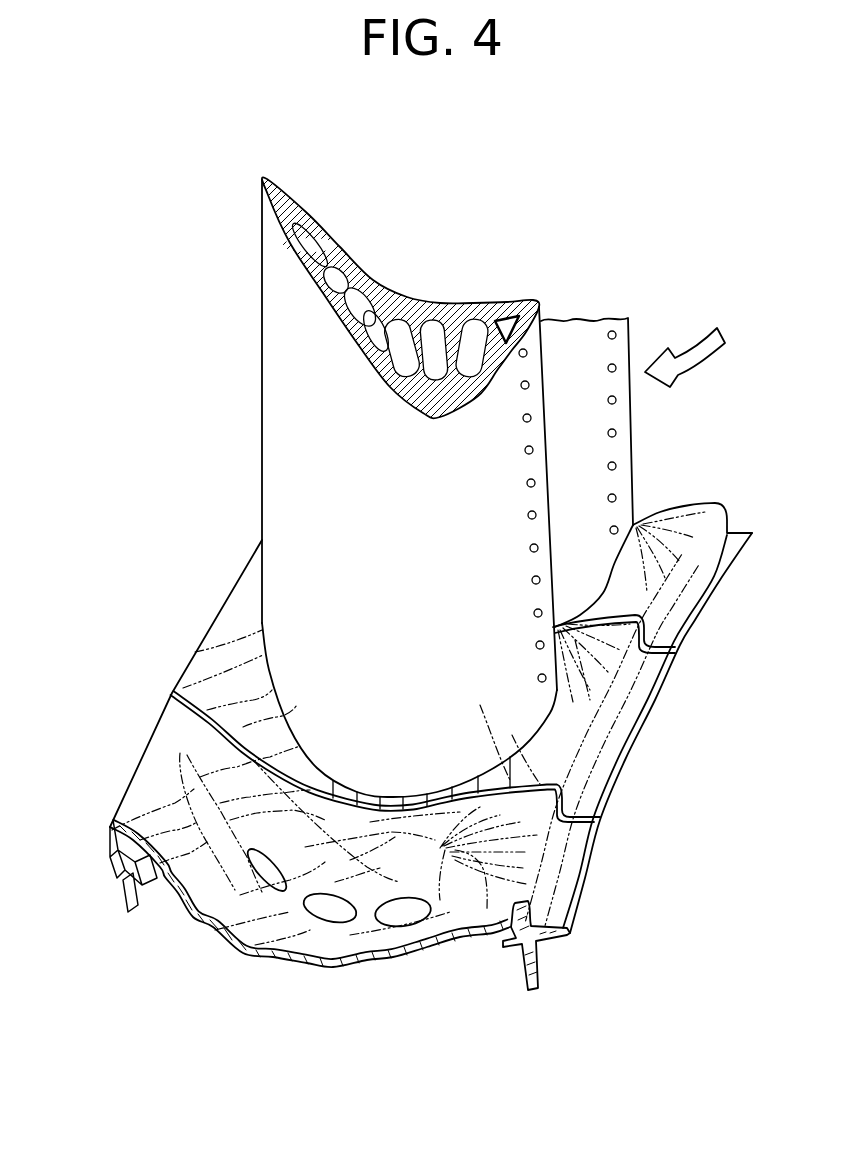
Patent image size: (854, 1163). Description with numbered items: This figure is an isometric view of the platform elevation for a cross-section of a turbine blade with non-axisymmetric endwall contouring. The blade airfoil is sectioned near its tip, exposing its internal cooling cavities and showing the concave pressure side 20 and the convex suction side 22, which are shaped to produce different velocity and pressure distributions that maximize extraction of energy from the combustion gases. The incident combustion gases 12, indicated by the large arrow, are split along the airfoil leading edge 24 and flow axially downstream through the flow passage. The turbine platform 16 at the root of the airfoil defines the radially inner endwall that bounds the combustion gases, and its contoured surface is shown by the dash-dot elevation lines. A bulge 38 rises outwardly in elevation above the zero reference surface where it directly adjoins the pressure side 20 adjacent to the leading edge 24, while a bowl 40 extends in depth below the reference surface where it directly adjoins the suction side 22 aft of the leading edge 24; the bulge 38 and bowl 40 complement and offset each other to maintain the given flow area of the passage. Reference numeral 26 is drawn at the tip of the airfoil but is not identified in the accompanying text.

The combustion gases 12 is at (695, 347).
The turbine platform 16 is at (190, 645).
The pressure side 20 is at (357, 257).
The suction side 22 is at (323, 307).
The leading edge 24 is at (541, 301).
The leading edge 26 is at (265, 178).
The bulge 38 is at (468, 858).
The bowl 40 is at (416, 818).